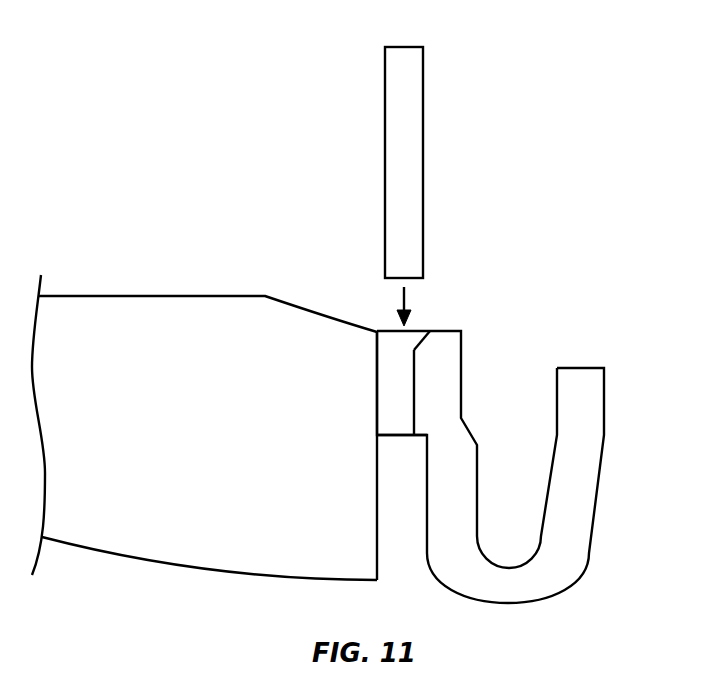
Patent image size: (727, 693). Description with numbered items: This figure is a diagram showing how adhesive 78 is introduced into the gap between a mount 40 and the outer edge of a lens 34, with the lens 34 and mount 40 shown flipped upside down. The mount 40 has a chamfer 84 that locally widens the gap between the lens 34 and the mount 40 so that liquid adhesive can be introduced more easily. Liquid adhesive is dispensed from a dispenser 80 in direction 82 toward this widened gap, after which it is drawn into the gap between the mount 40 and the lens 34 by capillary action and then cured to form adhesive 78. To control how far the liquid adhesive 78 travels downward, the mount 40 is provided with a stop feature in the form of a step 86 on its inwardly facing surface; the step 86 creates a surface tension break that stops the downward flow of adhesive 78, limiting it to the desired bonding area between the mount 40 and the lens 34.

The lens 34 is at (119, 307).
The mount 40 is at (600, 470).
The adhesive 78 is at (385, 330).
The dispenser 80 is at (423, 163).
The direction 82 is at (406, 295).
The chamfer 84 is at (421, 330).
The step 86 is at (420, 438).